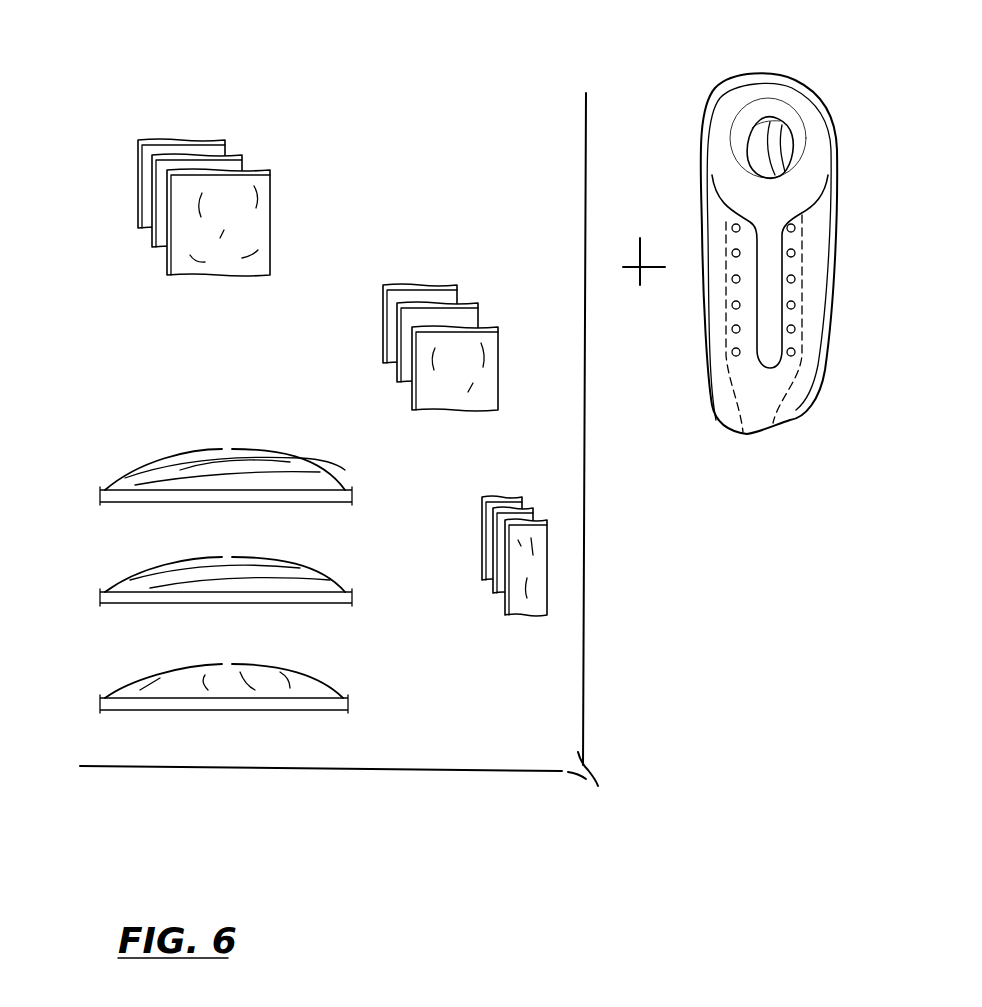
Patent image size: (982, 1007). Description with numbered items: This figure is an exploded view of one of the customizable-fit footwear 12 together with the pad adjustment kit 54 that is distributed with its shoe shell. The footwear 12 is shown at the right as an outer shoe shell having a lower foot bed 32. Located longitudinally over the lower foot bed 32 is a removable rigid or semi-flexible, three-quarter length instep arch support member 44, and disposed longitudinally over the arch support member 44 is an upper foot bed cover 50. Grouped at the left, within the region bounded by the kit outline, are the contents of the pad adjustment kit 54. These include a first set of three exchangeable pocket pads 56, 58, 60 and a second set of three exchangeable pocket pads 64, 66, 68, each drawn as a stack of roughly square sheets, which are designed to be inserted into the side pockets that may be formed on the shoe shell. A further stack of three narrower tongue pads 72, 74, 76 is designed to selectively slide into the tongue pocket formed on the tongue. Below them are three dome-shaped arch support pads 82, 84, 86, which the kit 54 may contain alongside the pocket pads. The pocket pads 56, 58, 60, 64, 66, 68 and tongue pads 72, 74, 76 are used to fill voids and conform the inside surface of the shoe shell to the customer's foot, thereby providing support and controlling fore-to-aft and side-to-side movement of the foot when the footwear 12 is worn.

The customizable-fit footwear 12 is at (695, 97).
The lower foot bed 32 is at (778, 157).
The instep arch support member 44 is at (780, 119).
The upper foot bed cover 50 is at (757, 113).
The pad adjustment kit 54 is at (372, 457).
The pocket pad 56 is at (152, 160).
The pocket pad 58 is at (150, 197).
The pocket pad 60 is at (160, 253).
The pocket pad 64 is at (383, 312).
The pocket pad 66 is at (397, 360).
The pocket pad 68 is at (415, 393).
The tongue pad 72 is at (483, 500).
The tongue pad 74 is at (490, 543).
The tongue pad 76 is at (505, 594).
The arch support pad 82 is at (140, 460).
The arch support pad 84 is at (135, 575).
The arch support pad 86 is at (122, 690).